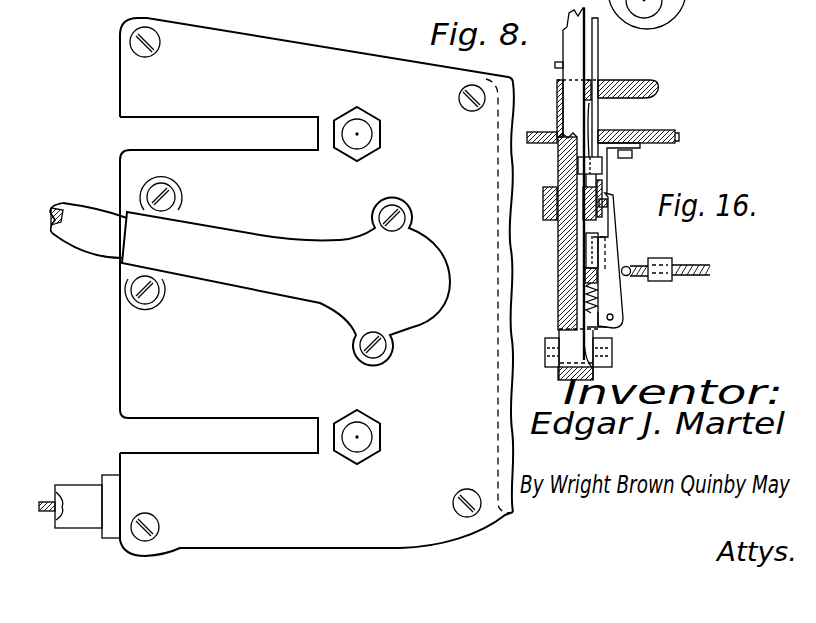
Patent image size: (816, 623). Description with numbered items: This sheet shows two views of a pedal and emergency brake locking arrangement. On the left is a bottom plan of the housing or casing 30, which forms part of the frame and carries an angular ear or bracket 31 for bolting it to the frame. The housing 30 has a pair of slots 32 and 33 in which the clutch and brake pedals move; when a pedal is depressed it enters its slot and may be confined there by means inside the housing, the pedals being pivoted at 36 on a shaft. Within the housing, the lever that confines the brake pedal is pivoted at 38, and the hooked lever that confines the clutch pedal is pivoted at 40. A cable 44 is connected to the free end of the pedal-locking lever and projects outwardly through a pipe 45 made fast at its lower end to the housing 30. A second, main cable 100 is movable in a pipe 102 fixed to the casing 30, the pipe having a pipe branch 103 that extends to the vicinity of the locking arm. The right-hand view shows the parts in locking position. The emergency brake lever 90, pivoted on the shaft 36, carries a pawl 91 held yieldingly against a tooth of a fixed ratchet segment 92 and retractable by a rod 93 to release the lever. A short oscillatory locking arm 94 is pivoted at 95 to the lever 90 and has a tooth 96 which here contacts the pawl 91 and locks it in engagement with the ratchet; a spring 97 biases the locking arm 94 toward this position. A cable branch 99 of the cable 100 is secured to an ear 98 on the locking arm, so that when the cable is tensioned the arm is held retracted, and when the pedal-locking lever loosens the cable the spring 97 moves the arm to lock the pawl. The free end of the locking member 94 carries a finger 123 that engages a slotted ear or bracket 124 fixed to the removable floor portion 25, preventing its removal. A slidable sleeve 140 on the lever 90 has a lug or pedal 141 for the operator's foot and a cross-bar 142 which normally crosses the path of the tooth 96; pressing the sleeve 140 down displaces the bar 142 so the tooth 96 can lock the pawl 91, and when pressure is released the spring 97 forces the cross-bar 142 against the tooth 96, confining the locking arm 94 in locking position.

In FIG. 8, the housing 30 is at (313, 72).
In FIG. 8, the angular ear or bracket 31 is at (507, 437).
In FIG. 8, the slot 32 is at (195, 438).
In FIG. 8, the slot 33 is at (177, 131).
In FIG. 8, the pivot 38 is at (357, 134).
In FIG. 8, the pivot 40 is at (357, 437).
In FIG. 8, the cable 100 is at (55, 205).
In FIG. 8, the pipe 102 is at (93, 232).
In FIG. 8, the cable 44 is at (45, 500).
In FIG. 8, the pipe 45 is at (80, 512).
In FIG. 16, the emergency brake lever 90 is at (572, 40).
In FIG. 16, the rod 93 is at (598, 43).
In FIG. 16, the lug or pedal 141 is at (653, 82).
In FIG. 16, the floor portion 25 is at (670, 130).
In FIG. 16, the slotted ear or bracket 124 is at (607, 177).
In FIG. 16, the finger 123 is at (604, 196).
In FIG. 16, the slidable sleeve 140 is at (558, 174).
In FIG. 16, the cross-bar 142 is at (572, 282).
In FIG. 16, the fixed ratchet segment 92 is at (583, 210).
In FIG. 16, the pawl 91 is at (584, 240).
In FIG. 16, the locking arm 94 is at (618, 247).
In FIG. 16, the tooth 96 is at (600, 248).
In FIG. 16, the spring 97 is at (586, 300).
In FIG. 16, the ear 98 is at (630, 278).
In FIG. 16, the cable branch 99 is at (680, 270).
In FIG. 16, the pipe branch 103 is at (668, 281).
In FIG. 16, the pivot 95 is at (622, 323).
In FIG. 16, the shaft pivot 36 is at (600, 348).